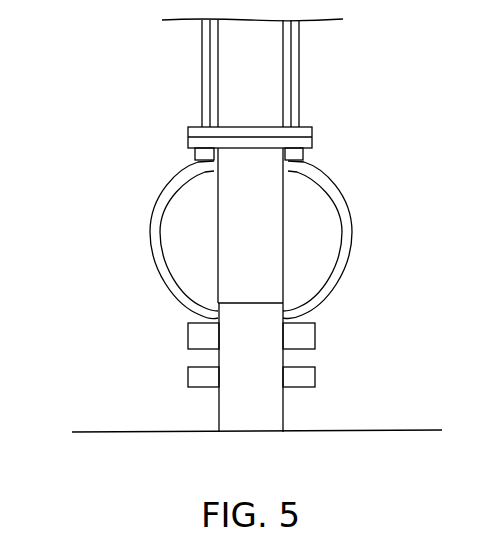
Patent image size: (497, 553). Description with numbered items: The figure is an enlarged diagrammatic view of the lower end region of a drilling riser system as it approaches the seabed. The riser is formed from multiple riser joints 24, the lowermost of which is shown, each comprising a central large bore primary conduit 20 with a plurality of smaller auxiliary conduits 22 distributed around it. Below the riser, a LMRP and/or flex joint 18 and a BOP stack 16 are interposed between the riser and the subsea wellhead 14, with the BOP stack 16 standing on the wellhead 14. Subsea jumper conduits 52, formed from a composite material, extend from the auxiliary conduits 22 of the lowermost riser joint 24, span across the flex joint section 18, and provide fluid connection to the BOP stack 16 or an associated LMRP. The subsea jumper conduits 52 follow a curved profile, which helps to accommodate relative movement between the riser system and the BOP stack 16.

The subsea wellhead 14 is at (285, 430).
The BOP stack 16 is at (230, 357).
The LMRP and/or flex joint 18 is at (270, 192).
The primary conduit 20 is at (265, 88).
The auxiliary conduits 22 is at (202, 54).
The riser joints 24 is at (154, 96).
The subsea jumper conduits 52 is at (150, 232).